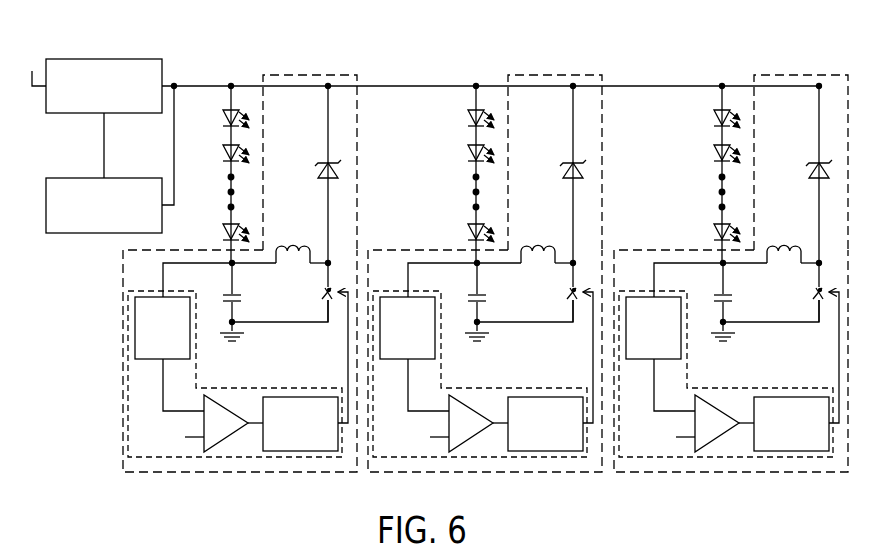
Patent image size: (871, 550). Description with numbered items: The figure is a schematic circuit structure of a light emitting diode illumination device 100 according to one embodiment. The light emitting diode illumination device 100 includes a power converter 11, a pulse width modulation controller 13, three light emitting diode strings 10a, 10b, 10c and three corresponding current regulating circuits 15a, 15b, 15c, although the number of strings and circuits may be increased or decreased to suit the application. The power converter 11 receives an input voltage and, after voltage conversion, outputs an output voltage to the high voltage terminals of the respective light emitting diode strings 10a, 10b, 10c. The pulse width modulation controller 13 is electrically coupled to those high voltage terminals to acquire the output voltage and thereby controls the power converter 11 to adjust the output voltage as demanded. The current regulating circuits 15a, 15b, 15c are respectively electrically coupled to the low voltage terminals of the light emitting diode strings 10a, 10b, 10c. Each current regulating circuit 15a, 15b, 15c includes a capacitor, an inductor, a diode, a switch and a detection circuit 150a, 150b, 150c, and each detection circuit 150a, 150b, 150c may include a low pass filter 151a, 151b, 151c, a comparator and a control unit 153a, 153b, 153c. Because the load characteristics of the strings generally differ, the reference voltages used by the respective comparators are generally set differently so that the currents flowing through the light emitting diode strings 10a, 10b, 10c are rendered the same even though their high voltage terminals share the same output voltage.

The light emitting diode illumination device 100 is at (510, 43).
The power converter 11 is at (85, 58).
The pulse width modulation controller 13 is at (100, 235).
The light emitting diode string 10a is at (220, 132).
The light emitting diode string 10b is at (458, 146).
The light emitting diode string 10c is at (705, 146).
The current regulating circuit 15a is at (324, 72).
The current regulating circuit 15b is at (539, 179).
The current regulating circuit 15c is at (785, 179).
The detection circuit 150a is at (217, 378).
The detection circuit 150b is at (485, 378).
The detection circuit 150c is at (731, 381).
The low pass filter 151a is at (134, 324).
The low pass filter 151b is at (480, 398).
The low pass filter 151c is at (726, 402).
The control unit 153a is at (302, 455).
The control unit 153b is at (545, 451).
The control unit 153c is at (791, 451).